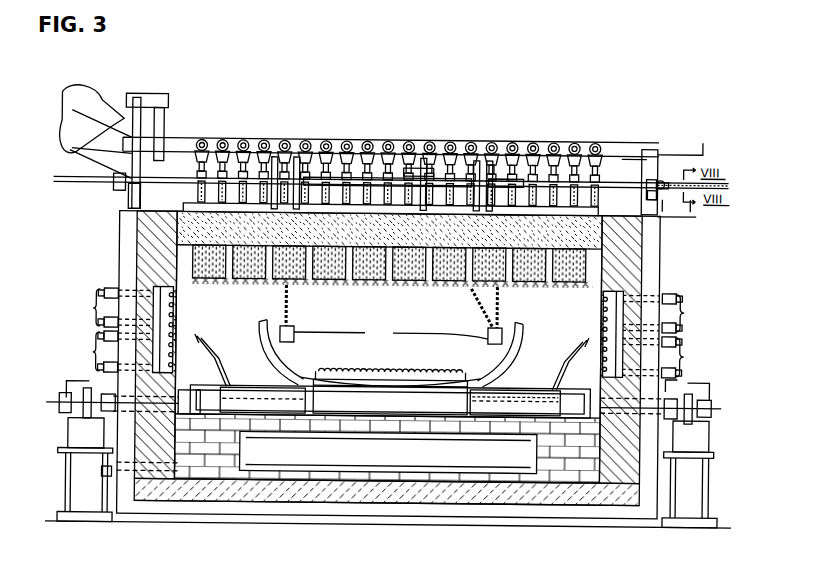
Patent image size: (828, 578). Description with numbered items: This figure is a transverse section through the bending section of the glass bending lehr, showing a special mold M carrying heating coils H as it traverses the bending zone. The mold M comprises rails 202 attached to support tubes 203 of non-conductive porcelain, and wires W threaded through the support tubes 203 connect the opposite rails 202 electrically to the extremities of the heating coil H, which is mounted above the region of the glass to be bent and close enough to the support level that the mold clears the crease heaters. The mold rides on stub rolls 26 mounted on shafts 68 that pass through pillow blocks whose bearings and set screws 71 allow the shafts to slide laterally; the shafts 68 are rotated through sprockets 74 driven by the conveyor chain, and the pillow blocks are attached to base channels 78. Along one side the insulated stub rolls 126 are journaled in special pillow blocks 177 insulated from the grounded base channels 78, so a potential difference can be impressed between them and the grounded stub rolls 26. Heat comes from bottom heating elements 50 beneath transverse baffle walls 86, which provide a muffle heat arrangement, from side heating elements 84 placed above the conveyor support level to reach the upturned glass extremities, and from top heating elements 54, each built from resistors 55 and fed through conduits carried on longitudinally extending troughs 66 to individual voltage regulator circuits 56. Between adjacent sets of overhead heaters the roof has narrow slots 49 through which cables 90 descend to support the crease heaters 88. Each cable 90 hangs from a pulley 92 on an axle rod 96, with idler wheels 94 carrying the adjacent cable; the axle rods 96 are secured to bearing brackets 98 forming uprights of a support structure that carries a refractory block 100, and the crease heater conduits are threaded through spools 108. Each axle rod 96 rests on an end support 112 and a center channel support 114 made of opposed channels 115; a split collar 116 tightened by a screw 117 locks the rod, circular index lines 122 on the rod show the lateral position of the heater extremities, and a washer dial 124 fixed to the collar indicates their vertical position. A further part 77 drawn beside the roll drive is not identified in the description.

The stub rolls 26 is at (194, 405).
The slots 49 is at (247, 286).
The bottom electrical heating elements 50 is at (388, 452).
The top electrical heating elements 54 is at (401, 283).
The resistor 55 is at (195, 287).
The individual voltage regulator circuits 56 is at (700, 354).
The longitudinally extending troughs 66 is at (68, 99).
The shafts 68 is at (82, 412).
The set screws 71 is at (58, 407).
The sprockets 74 is at (100, 423).
The bracket 77 is at (81, 384).
The base channels 78 is at (703, 427).
The bending section side heating elements 84 is at (610, 341).
The transverse baffle walls 86 is at (433, 428).
The crease heaters 88 is at (391, 332).
The cable 90 is at (285, 309).
The pulley 92 is at (274, 170).
The idler wheel 94 is at (306, 172).
The axle rod 96 is at (72, 186).
The bearing brackets 98 is at (243, 214).
The refractory block 100 is at (233, 214).
The spools 108 is at (475, 302).
The end support 112 is at (650, 180).
The center channel support 114 is at (393, 176).
The channels 115 is at (353, 172).
The split collar 116 is at (646, 185).
The screw 117 is at (655, 180).
The circular index lines 122 is at (665, 183).
The washer dial 124 is at (661, 179).
The insulated stub rolls 126 is at (568, 405).
The special pillow blocks 177 is at (672, 392).
The rails 202 is at (585, 350).
The support tubes 203 is at (244, 386).
The special mold M is at (529, 330).
The heating coils H is at (424, 370).
The wires W is at (521, 382).